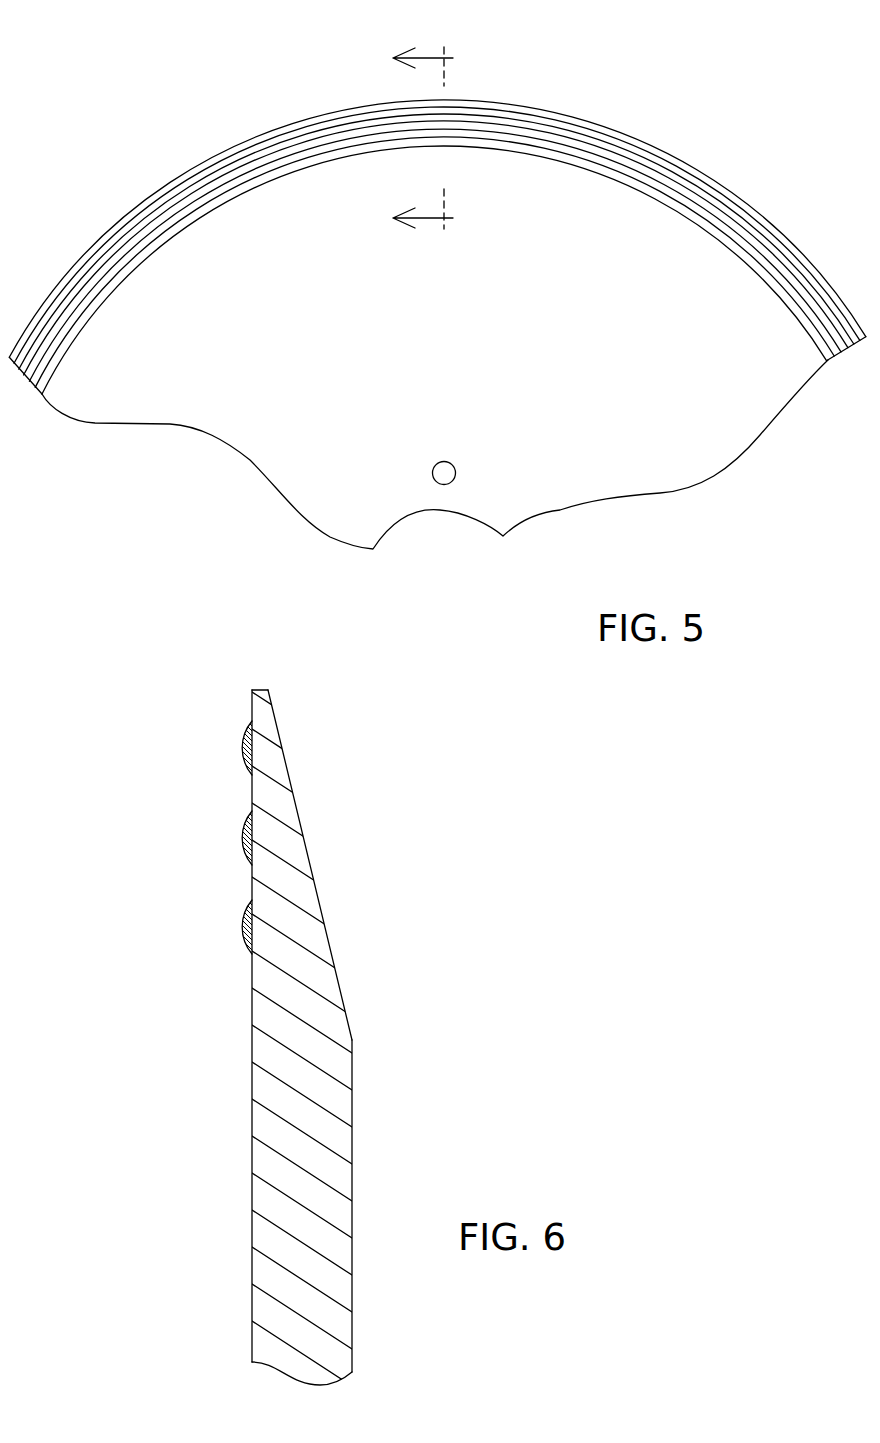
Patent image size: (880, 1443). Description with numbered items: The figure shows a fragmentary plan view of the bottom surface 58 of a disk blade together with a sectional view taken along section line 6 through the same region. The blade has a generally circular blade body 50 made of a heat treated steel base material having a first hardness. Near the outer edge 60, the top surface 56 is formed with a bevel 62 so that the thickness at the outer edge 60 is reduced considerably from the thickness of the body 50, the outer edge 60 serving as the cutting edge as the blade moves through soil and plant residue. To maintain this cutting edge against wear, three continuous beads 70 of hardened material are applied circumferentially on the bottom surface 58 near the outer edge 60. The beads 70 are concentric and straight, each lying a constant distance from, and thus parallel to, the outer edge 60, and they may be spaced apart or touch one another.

In FIG. 5, the blade body 50 is at (690, 362).
In FIG. 6, the top surface 56 is at (352, 1107).
In FIG. 5, the bottom surface 58 is at (330, 364).
In FIG. 6, the bottom surface 58 is at (252, 1120).
In FIG. 5, the outer edge 60 is at (672, 155).
In FIG. 6, the outer edge 60 is at (258, 690).
In FIG. 6, the bevel 62 is at (313, 866).
In FIG. 5, the beads 70 is at (212, 203).
In FIG. 6, the beads 70 is at (243, 752).
In FIG. 5, the section line 6- 6 is at (423, 141).